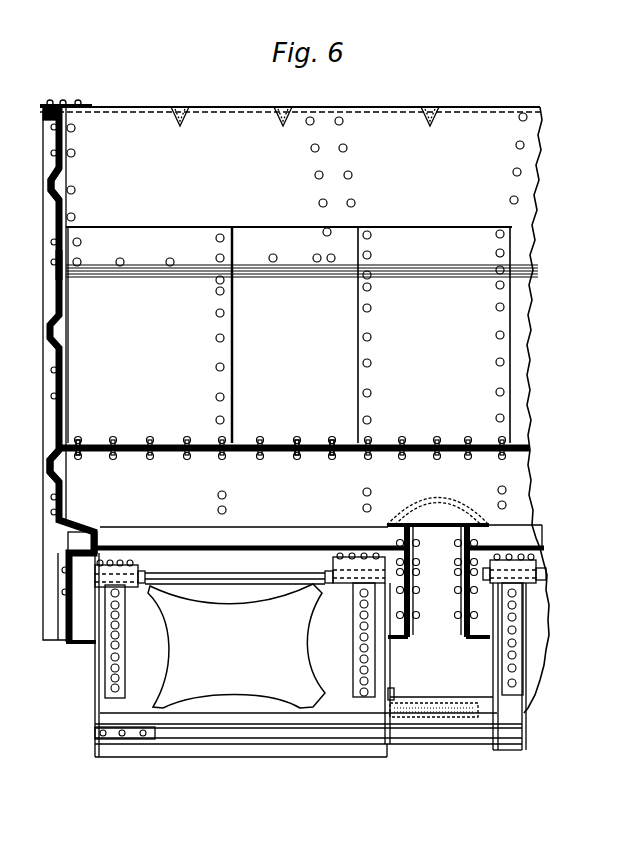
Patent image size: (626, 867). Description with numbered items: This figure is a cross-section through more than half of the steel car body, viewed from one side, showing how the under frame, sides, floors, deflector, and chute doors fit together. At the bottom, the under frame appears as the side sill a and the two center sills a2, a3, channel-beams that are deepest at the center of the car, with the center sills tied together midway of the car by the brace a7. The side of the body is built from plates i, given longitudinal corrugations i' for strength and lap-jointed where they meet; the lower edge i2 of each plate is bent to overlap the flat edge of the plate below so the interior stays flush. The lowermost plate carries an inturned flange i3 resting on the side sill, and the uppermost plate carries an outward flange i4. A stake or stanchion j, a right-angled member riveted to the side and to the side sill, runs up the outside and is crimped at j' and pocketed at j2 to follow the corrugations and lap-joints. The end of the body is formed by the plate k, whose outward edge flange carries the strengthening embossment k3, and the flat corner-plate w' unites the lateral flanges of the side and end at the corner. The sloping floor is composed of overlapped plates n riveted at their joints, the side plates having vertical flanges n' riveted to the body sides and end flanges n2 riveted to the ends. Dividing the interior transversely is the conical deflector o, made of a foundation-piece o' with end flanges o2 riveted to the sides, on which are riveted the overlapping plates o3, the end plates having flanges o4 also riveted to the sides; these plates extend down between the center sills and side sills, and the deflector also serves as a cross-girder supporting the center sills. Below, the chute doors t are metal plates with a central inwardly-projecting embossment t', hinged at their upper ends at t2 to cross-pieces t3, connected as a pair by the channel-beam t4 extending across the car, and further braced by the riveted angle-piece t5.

The end plate k is at (294, 410).
The embossment k3 is at (290, 114).
The flat corner-plate w' is at (66, 92).
The outwardly extending flange i4 is at (43, 113).
The side plate i is at (82, 315).
The longitudinal corrugation i' is at (88, 172).
The bent or flanged lower edge i2 is at (80, 258).
The inturned flange i3 is at (80, 533).
The stake or stanchion j is at (50, 375).
The crimp j' is at (32, 187).
The pocket j2 is at (54, 262).
The floor plate n is at (302, 370).
The vertical flange n' is at (90, 335).
The end flange n2 is at (295, 245).
The conical deflector o is at (295, 441).
The foundation-piece o' is at (325, 457).
The end flange o2 is at (66, 465).
The overlapping plate o3 is at (284, 446).
The flange o4 is at (80, 440).
The door t is at (317, 655).
The central inwardly-projecting embossment t' is at (236, 646).
The hinge t2 is at (546, 572).
The cross-piece t3 is at (250, 553).
The channel-beam t4 is at (422, 735).
The angle-piece t5 is at (398, 696).
The side sill a is at (74, 646).
The center sill a2 is at (396, 640).
The center sill a3 is at (456, 640).
The brace a7 is at (438, 568).